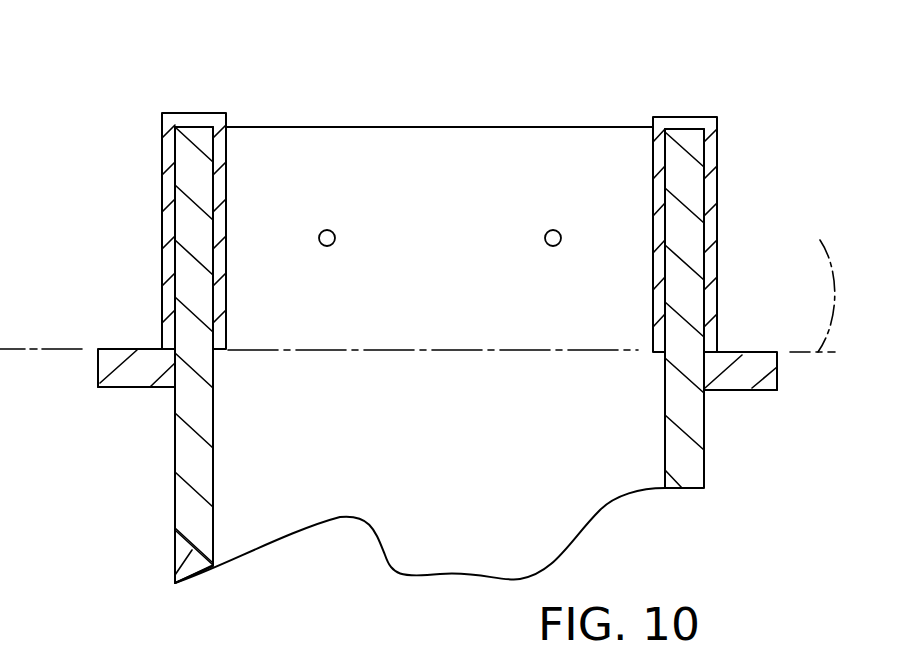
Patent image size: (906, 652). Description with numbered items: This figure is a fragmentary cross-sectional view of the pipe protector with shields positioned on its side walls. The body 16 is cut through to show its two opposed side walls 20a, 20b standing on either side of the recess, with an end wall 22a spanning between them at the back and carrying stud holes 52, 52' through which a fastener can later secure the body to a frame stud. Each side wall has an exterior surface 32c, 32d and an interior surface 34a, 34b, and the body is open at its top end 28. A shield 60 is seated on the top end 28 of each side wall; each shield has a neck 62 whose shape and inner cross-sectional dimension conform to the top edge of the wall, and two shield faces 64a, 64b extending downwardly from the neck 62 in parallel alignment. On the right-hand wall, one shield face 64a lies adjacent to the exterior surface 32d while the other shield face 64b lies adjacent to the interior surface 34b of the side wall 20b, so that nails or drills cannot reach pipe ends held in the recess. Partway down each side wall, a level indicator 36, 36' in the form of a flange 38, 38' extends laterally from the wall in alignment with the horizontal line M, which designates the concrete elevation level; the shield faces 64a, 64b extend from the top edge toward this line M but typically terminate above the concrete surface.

The body 16 is at (478, 127).
The end wall 22a is at (372, 127).
The shield 60 is at (180, 127).
The neck 62 is at (683, 126).
The top end 28 is at (697, 133).
The stud hole 52 is at (302, 155).
The stud hole 52' is at (508, 201).
The shield face 64a is at (717, 222).
The shield face 64b is at (652, 270).
The level indicator 36 is at (757, 330).
The level indicator 36' is at (101, 329).
The flange 38 is at (761, 415).
The flange 38' is at (97, 418).
The exterior surface 32c is at (173, 508).
The exterior surface 32d is at (703, 473).
The side wall 20a is at (175, 562).
The side wall 20b is at (688, 398).
The interior surface 34a is at (213, 508).
The interior surface 34b is at (663, 447).
The horizontal line M is at (819, 282).